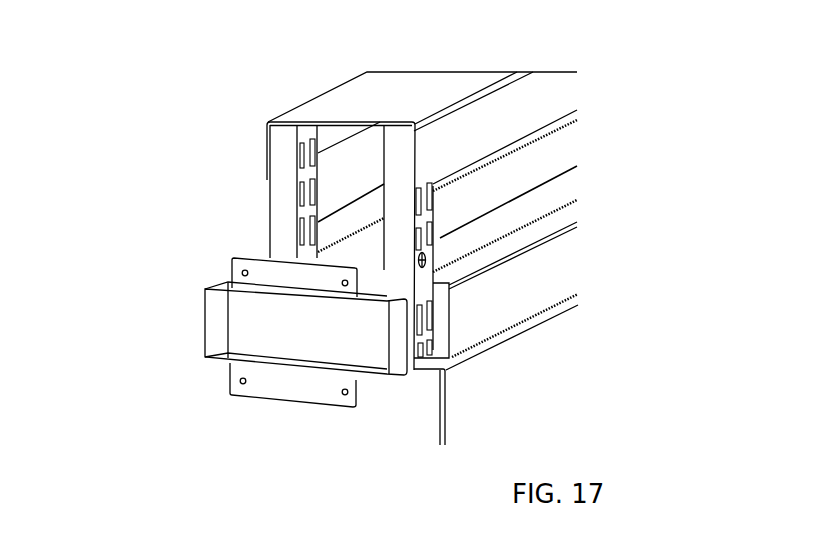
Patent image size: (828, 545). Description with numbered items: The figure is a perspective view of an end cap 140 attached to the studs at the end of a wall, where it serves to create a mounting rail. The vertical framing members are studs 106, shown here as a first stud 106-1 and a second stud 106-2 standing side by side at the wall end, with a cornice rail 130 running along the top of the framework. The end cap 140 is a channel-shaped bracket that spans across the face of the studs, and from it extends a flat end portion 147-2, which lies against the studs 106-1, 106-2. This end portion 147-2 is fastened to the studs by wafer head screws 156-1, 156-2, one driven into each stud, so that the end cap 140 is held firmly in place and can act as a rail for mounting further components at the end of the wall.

The stud 106 is at (309, 422).
The first stud 106-1 is at (243, 214).
The second stud 106-2 is at (399, 223).
The cornice rail 130 is at (242, 136).
The end cap 140 is at (195, 342).
The end portion 147-2 is at (242, 255).
The wafer head screw 156-1 is at (245, 270).
The wafer head screw 156-2 is at (387, 272).